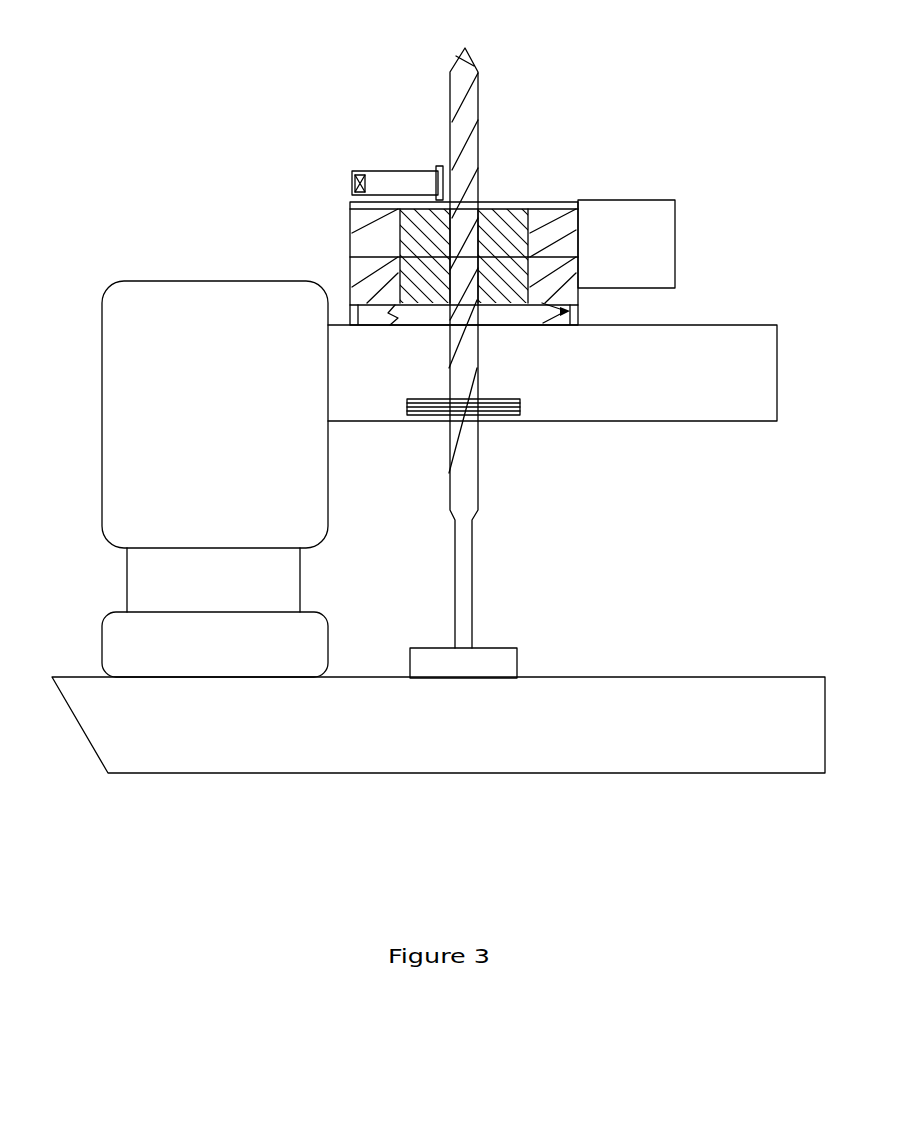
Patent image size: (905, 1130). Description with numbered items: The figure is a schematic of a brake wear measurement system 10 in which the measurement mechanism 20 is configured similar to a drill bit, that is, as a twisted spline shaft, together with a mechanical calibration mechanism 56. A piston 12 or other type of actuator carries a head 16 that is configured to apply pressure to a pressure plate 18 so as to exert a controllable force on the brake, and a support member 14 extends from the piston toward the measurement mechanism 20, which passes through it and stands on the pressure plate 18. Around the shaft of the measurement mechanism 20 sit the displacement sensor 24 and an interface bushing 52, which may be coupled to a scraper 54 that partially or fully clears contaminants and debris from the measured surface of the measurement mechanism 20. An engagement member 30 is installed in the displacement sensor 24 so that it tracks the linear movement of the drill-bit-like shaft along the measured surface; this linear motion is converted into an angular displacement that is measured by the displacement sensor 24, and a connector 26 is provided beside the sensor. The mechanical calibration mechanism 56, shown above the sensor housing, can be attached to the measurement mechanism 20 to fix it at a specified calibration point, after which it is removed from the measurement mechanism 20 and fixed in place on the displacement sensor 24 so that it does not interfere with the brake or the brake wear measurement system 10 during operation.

The brake wear measurement system 10 is at (192, 106).
The piston 12 is at (160, 314).
The support member 14 is at (728, 377).
The head 16 is at (131, 645).
The pressure plate 18 is at (177, 775).
The measurement mechanism 20 is at (450, 142).
The displacement sensor 24 is at (505, 228).
The connector 26 is at (625, 200).
The engagement member 30 is at (448, 258).
The interface bushing 52 is at (528, 291).
The scraper 54 is at (530, 250).
The mechanical calibration mechanism 56 is at (378, 170).